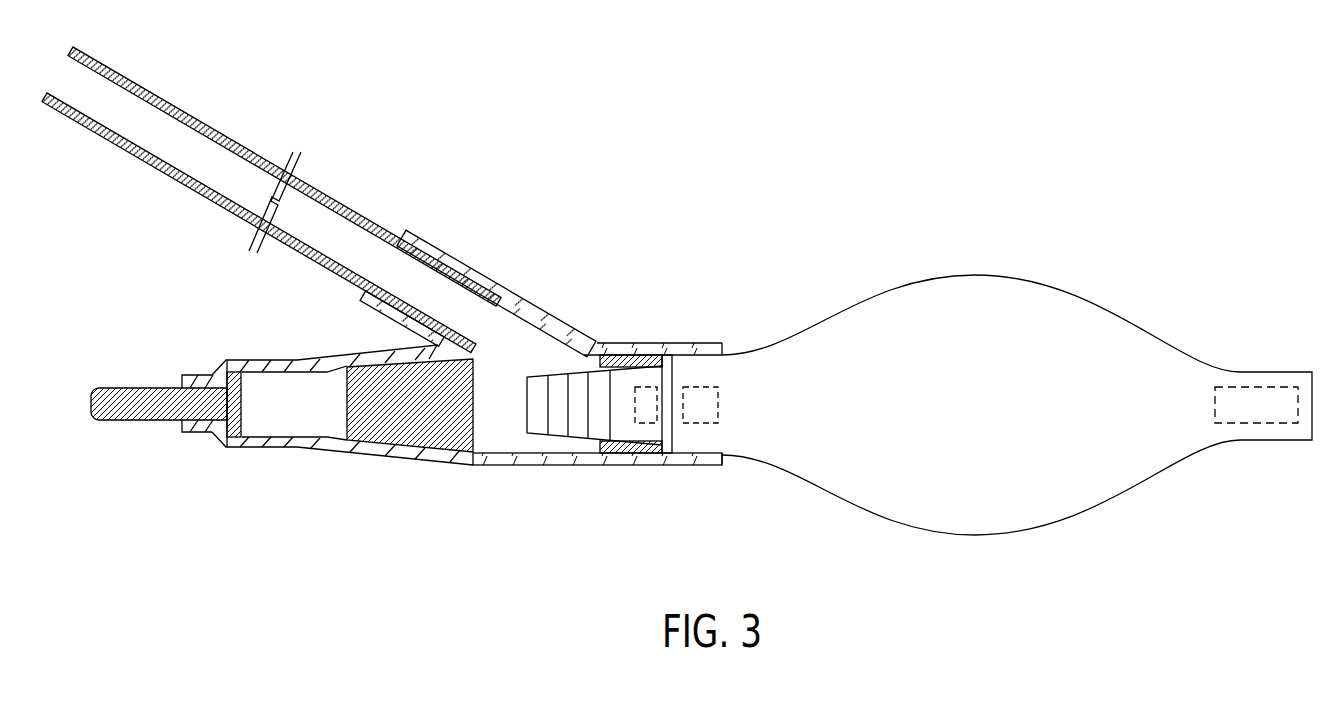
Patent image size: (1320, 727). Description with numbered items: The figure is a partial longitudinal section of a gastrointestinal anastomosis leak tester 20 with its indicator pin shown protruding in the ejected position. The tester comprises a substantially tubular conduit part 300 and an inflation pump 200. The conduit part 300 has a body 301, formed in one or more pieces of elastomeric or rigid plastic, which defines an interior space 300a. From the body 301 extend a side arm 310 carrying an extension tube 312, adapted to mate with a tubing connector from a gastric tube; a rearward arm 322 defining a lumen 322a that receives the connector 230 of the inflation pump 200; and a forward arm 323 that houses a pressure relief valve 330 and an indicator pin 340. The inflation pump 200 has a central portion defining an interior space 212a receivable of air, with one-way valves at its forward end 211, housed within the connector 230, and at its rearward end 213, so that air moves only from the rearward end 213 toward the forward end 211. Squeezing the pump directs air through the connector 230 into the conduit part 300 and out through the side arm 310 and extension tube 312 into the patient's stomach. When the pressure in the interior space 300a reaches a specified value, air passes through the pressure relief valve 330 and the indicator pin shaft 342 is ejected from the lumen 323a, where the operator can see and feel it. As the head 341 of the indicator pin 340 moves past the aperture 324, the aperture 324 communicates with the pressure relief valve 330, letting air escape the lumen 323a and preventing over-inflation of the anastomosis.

The anastomosis leak tester 20 is at (674, 90).
The conduit part 300 is at (496, 176).
The extension tube 312 is at (326, 191).
The side arm 310 is at (493, 278).
The forward arm 323 is at (300, 359).
The lumen 323a is at (316, 416).
The head 341 is at (231, 436).
The aperture 324 is at (252, 456).
The indicator pin 340 is at (150, 387).
The indicator pin shaft 342 is at (122, 427).
The pressure relief valve 330 is at (398, 428).
The body 301 is at (473, 461).
The interior space 300a is at (498, 398).
The rearward arm 322 is at (668, 464).
The lumen 322a is at (588, 443).
The connector 230 is at (578, 386).
The inflation pump 200 is at (962, 180).
The forward end 211 is at (707, 352).
The interior space 212a is at (1026, 418).
The rearward end 213 is at (1246, 370).